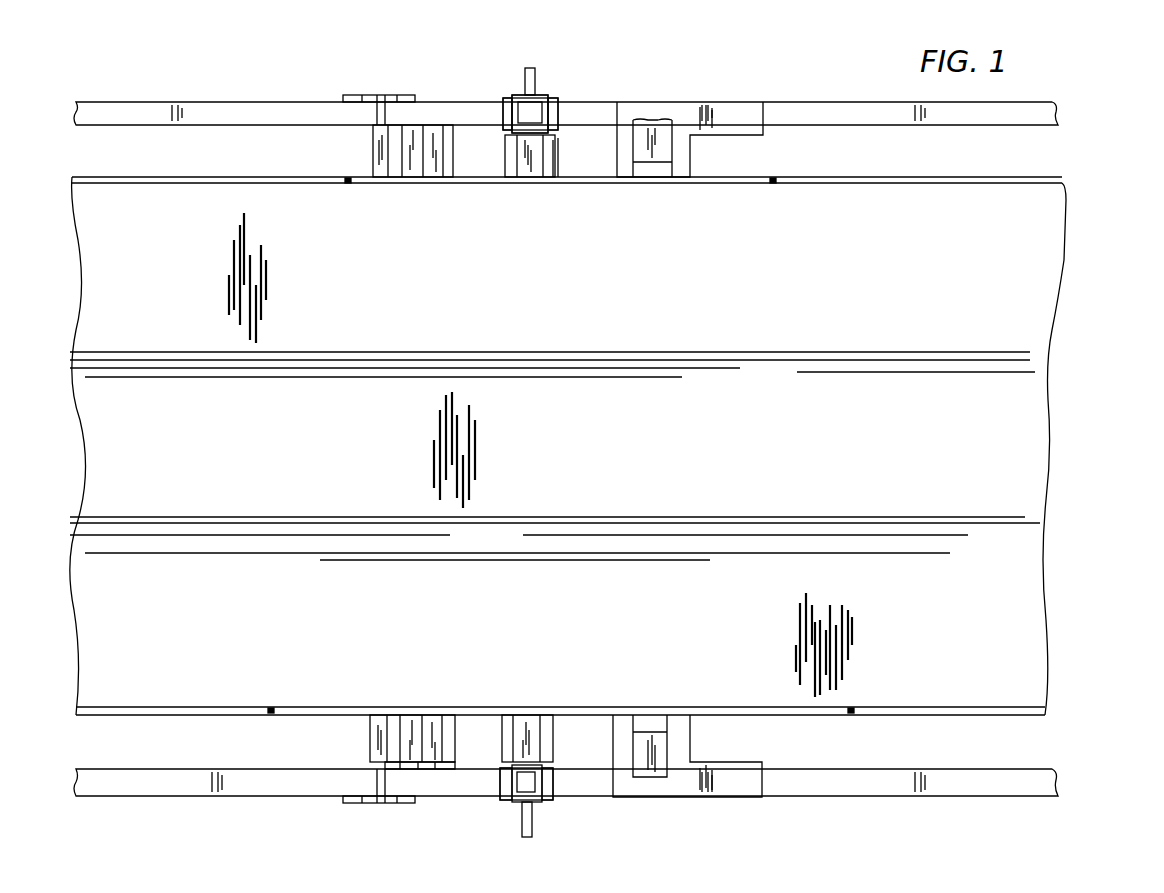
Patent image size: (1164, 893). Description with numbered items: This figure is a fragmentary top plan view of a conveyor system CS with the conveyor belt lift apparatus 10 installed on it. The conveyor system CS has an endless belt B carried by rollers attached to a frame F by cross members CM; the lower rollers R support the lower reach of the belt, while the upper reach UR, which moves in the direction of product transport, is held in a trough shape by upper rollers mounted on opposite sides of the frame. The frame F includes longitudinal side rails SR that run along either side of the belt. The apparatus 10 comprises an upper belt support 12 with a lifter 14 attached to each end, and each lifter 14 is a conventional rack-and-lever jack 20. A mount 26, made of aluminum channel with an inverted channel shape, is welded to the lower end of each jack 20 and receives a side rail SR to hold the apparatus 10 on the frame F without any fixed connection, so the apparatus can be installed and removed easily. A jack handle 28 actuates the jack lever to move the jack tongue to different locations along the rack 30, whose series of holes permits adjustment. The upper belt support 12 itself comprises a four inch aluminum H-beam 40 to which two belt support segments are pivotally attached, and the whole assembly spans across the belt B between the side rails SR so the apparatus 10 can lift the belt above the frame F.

The conveyor belt lift apparatus 10 is at (531, 64).
The upper belt support 12 is at (506, 160).
The lifter 14 is at (558, 110).
The rack-and-lever jack 20 is at (512, 100).
The mount 26 is at (503, 110).
The jack handle 28 is at (537, 94).
The rack 30 is at (548, 97).
The H-beam 40 is at (558, 148).
The endless belt B is at (1063, 258).
The conveyor system CS is at (1066, 133).
The side rails SR is at (1008, 127).
The upper reach UR is at (1012, 716).
The frame F is at (832, 102).
The lower rollers R is at (400, 140).
The cross members CM is at (372, 157).